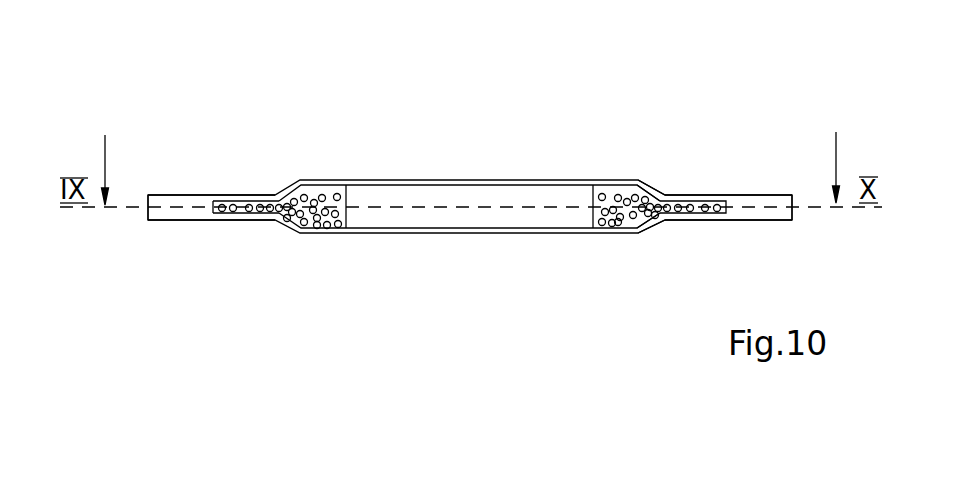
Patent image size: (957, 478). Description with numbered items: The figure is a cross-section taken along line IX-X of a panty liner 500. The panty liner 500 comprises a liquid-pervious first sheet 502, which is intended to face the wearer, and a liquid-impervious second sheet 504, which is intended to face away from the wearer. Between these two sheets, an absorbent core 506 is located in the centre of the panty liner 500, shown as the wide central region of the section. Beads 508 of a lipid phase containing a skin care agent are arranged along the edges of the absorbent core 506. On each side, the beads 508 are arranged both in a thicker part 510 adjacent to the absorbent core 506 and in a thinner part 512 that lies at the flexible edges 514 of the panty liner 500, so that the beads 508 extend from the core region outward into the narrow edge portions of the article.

The panty liner 500 is at (563, 180).
The liquid-pervious first sheet 502 is at (445, 182).
The liquid-impervious second sheet 504 is at (493, 230).
The absorbent core 506 is at (405, 207).
The beads 508 is at (303, 198).
The thicker part 510 is at (630, 220).
The thinner part 512 is at (683, 205).
The flexible edges 514 is at (148, 220).